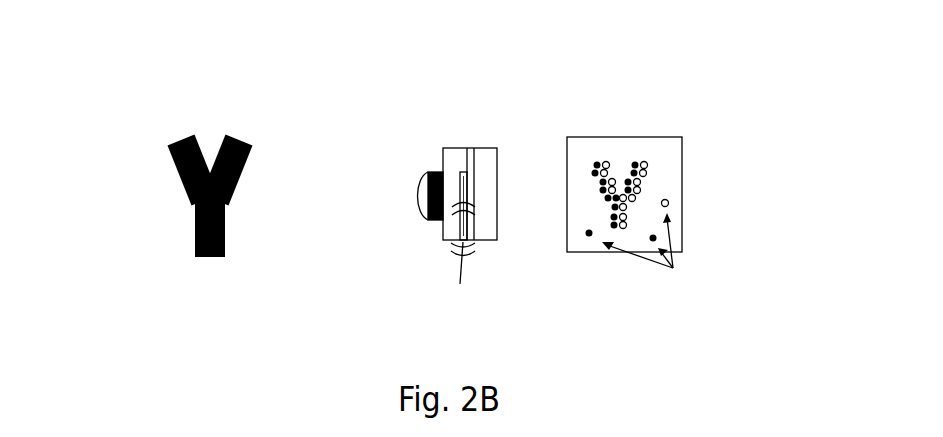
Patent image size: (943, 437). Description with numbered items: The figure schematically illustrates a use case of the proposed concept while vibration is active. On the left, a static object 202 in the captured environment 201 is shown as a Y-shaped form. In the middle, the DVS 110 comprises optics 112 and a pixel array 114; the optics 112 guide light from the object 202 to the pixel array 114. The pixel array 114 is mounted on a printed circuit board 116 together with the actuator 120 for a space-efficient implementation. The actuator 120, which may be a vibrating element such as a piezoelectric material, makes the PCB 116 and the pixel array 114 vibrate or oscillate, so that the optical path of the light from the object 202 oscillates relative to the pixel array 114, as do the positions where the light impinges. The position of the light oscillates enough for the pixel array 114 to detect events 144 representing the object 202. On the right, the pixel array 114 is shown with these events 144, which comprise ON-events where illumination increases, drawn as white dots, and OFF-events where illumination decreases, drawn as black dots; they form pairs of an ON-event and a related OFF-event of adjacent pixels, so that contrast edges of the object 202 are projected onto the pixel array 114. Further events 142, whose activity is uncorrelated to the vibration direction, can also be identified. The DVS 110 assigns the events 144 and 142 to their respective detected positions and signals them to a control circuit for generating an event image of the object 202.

The captured environment 201 is at (156, 85).
The object 202 is at (172, 170).
The DVS 110 is at (472, 86).
The printed circuit board 116 is at (467, 165).
The optics 112 is at (420, 200).
The pixel array 114 is at (575, 152).
The actuator 120 is at (464, 269).
The events 144 is at (648, 165).
The events 142 is at (670, 204).